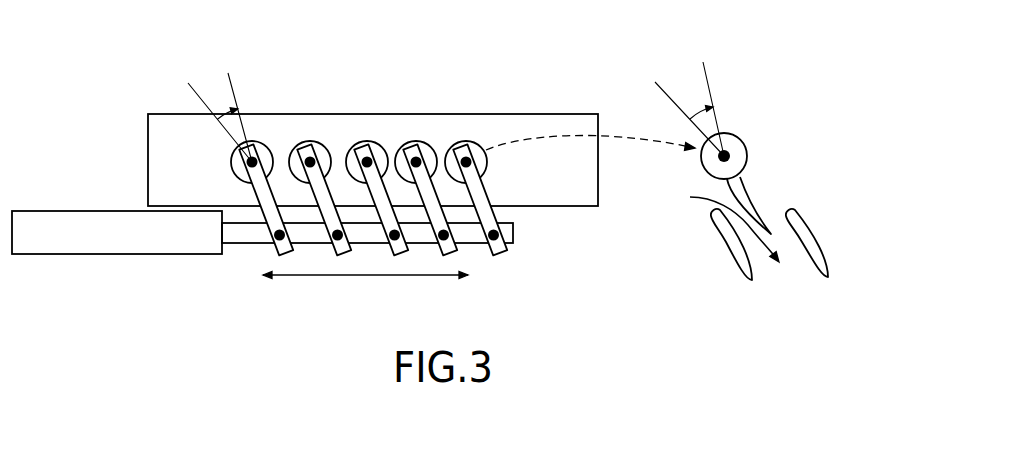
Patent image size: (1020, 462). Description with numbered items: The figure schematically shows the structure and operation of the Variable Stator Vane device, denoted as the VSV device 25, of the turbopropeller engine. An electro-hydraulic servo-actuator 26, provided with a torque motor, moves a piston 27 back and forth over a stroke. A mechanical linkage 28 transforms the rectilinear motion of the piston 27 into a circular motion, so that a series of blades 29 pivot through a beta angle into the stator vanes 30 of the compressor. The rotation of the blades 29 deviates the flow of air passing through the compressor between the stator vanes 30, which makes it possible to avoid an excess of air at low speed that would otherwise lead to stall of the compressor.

The VSV device 25 is at (388, 154).
The electro-hydraulic servo-actuator 26 is at (75, 256).
The piston 27 is at (513, 244).
The mechanical linkage 28 is at (500, 195).
The blades 29 is at (745, 195).
The stator vanes 30 is at (745, 270).